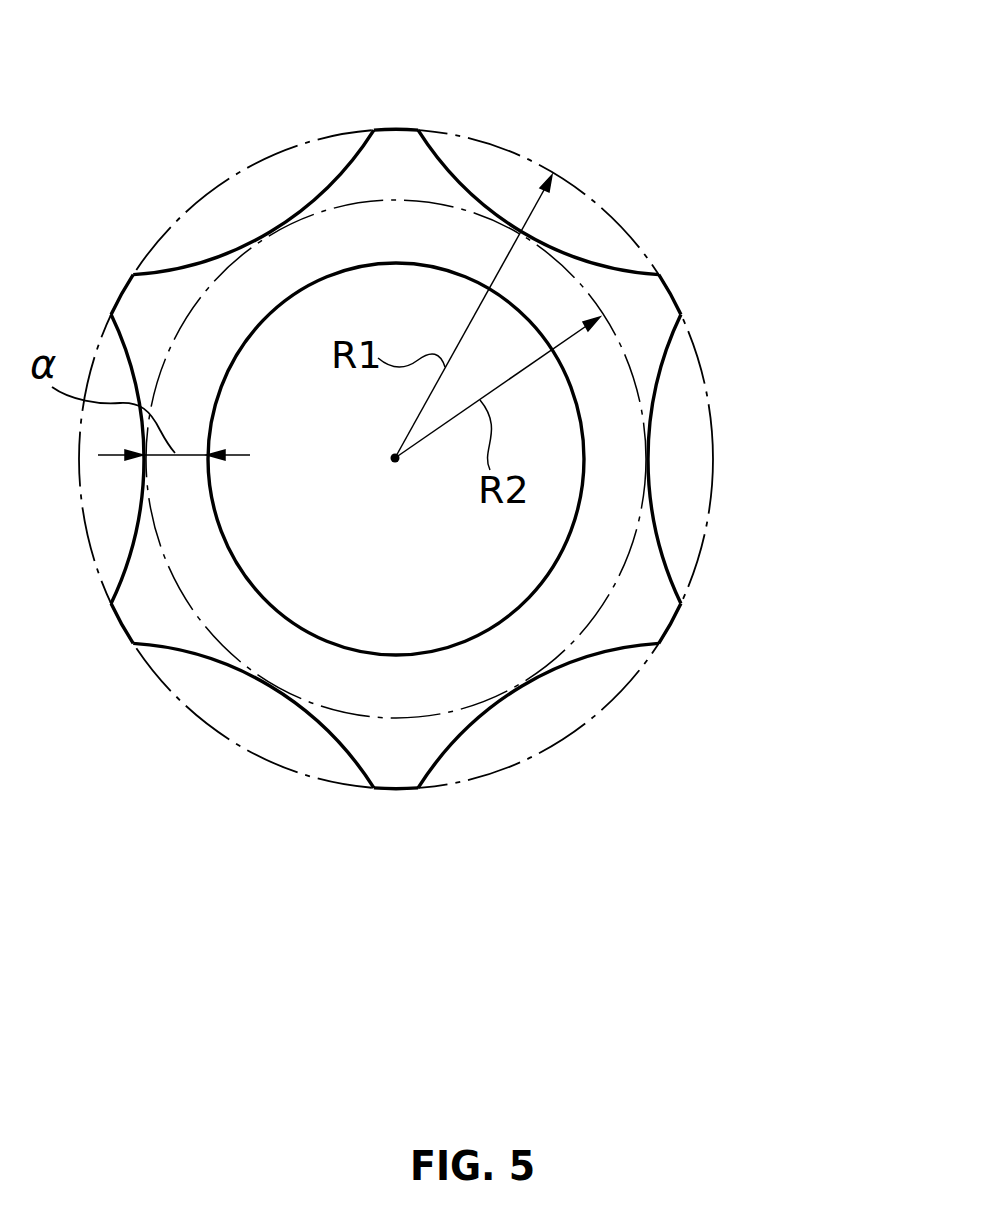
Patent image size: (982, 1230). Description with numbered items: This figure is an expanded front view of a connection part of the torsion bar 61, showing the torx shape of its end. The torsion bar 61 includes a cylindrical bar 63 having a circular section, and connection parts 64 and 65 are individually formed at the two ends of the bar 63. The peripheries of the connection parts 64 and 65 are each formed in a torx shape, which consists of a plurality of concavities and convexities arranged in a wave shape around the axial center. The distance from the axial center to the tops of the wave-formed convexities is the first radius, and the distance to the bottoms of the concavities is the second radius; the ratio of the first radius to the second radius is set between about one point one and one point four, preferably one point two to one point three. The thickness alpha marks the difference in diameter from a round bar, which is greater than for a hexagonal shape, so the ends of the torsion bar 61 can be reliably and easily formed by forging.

The torsion bar 61 is at (337, 175).
The cylindrical bar 63 is at (447, 592).
The connection part 64 is at (643, 593).
The connection part 65 is at (474, 458).